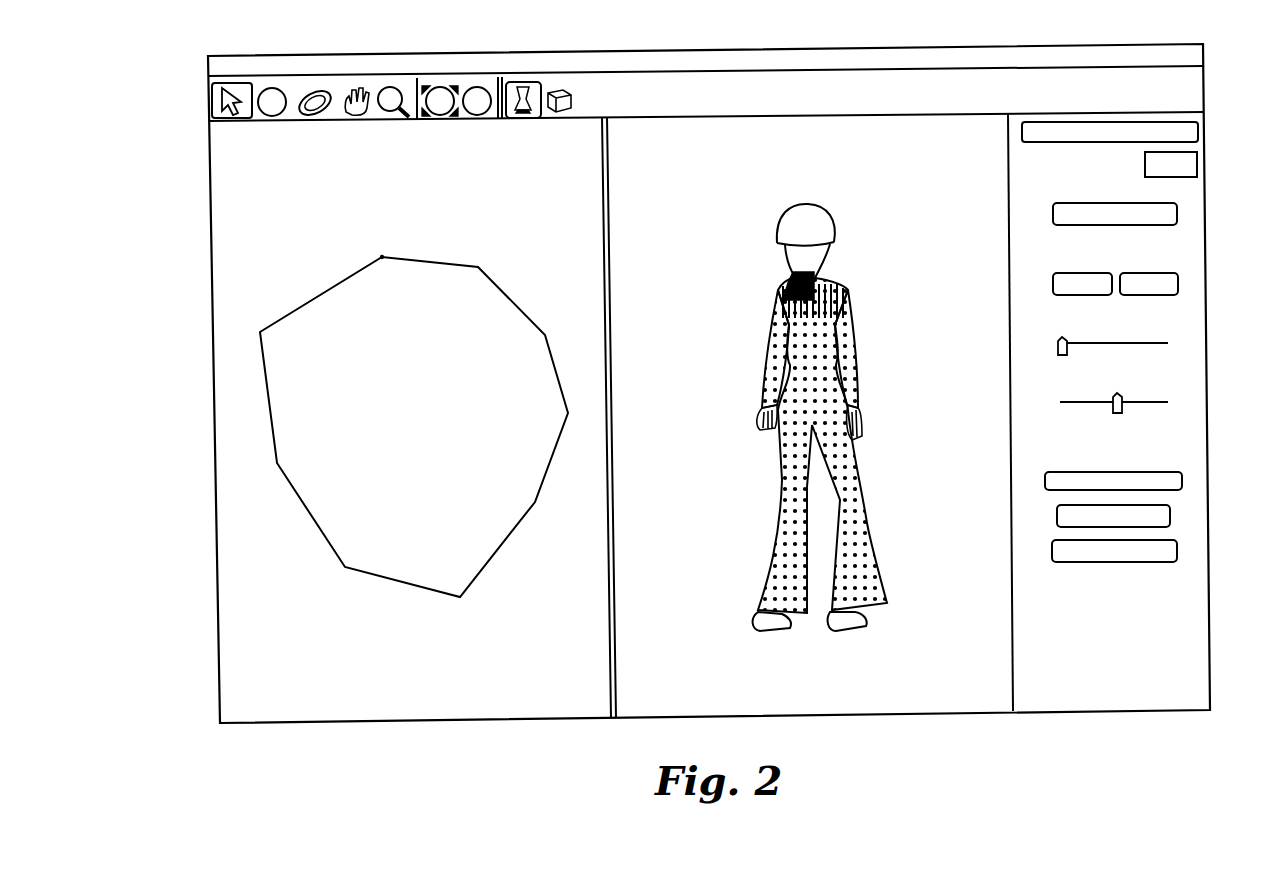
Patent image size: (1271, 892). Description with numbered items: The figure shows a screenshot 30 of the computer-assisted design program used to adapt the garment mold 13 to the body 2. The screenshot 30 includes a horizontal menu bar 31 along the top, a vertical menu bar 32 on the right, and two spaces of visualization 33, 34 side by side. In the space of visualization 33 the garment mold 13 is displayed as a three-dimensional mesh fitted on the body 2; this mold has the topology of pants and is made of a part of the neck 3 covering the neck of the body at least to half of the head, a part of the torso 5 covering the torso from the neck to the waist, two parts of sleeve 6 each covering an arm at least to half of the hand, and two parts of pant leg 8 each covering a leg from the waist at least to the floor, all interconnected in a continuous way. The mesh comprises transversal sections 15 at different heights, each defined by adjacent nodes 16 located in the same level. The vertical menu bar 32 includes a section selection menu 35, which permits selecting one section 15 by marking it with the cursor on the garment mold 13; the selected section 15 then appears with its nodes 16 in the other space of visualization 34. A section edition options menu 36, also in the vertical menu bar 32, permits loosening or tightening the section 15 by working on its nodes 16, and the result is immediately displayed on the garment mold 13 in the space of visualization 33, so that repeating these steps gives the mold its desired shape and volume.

The body 2 is at (795, 222).
The part of the neck 3 is at (815, 253).
The part of the torso 5 is at (785, 300).
The part of sleeve 6 is at (775, 362).
The part of pant leg 8 is at (790, 482).
The garment mold 13 is at (825, 411).
The transversal section 15 is at (330, 288).
The node 16 is at (382, 257).
The screenshot 30 is at (390, 723).
The horizontal menu bar 31 is at (215, 108).
The vertical menu bar 32 is at (1137, 412).
The space of visualization 33 is at (975, 640).
The space of visualization 34 is at (253, 571).
The section selection menu 35 is at (1182, 210).
The section edition options menu 36 is at (1180, 381).